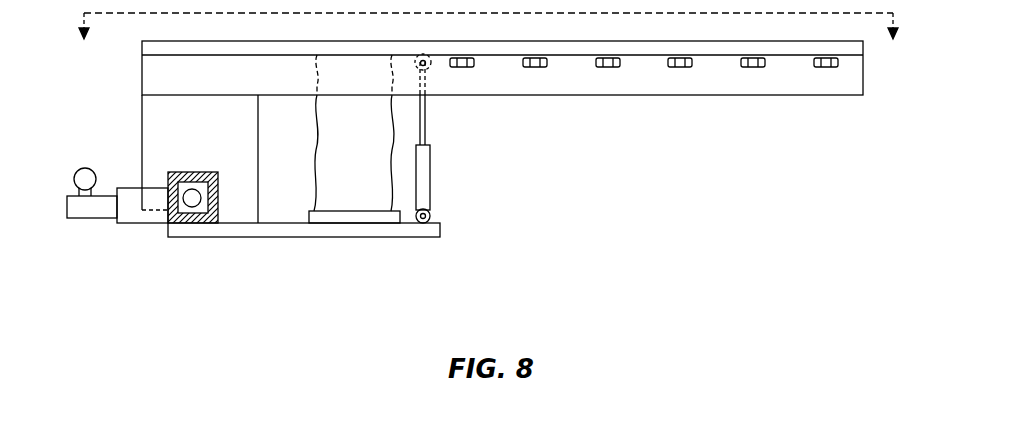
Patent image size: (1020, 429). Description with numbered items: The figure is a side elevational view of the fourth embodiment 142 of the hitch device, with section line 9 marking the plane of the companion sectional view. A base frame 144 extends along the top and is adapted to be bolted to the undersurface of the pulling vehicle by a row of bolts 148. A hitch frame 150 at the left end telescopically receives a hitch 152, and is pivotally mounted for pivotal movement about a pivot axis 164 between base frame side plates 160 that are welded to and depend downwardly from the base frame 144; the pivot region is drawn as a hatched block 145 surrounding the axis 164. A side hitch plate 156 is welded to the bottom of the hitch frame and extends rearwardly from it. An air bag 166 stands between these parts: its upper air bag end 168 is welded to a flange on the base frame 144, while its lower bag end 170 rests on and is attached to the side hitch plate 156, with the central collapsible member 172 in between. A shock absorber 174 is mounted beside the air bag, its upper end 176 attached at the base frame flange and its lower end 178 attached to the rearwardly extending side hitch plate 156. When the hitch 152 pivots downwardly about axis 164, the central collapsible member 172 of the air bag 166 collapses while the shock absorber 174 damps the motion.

The section line 9- 9 is at (489, 41).
The fourth embodiment 142 is at (600, 185).
The base frame 144 is at (823, 87).
The pivot block 145 is at (209, 172).
The bolts 148 is at (465, 67).
The hitch frame 150 is at (117, 222).
The hitch 152 is at (107, 192).
The side hitch plate 156 is at (416, 238).
The base frame side plate 160 is at (249, 130).
The pivot axis 164 is at (192, 207).
The air bag 166 is at (396, 203).
The upper air bag end 168 is at (317, 88).
The lower bag end 170 is at (330, 219).
The central collapsible member 172 is at (377, 150).
The shock absorber 174 is at (430, 153).
The upper end 176 is at (431, 70).
The lower end 178 is at (431, 216).